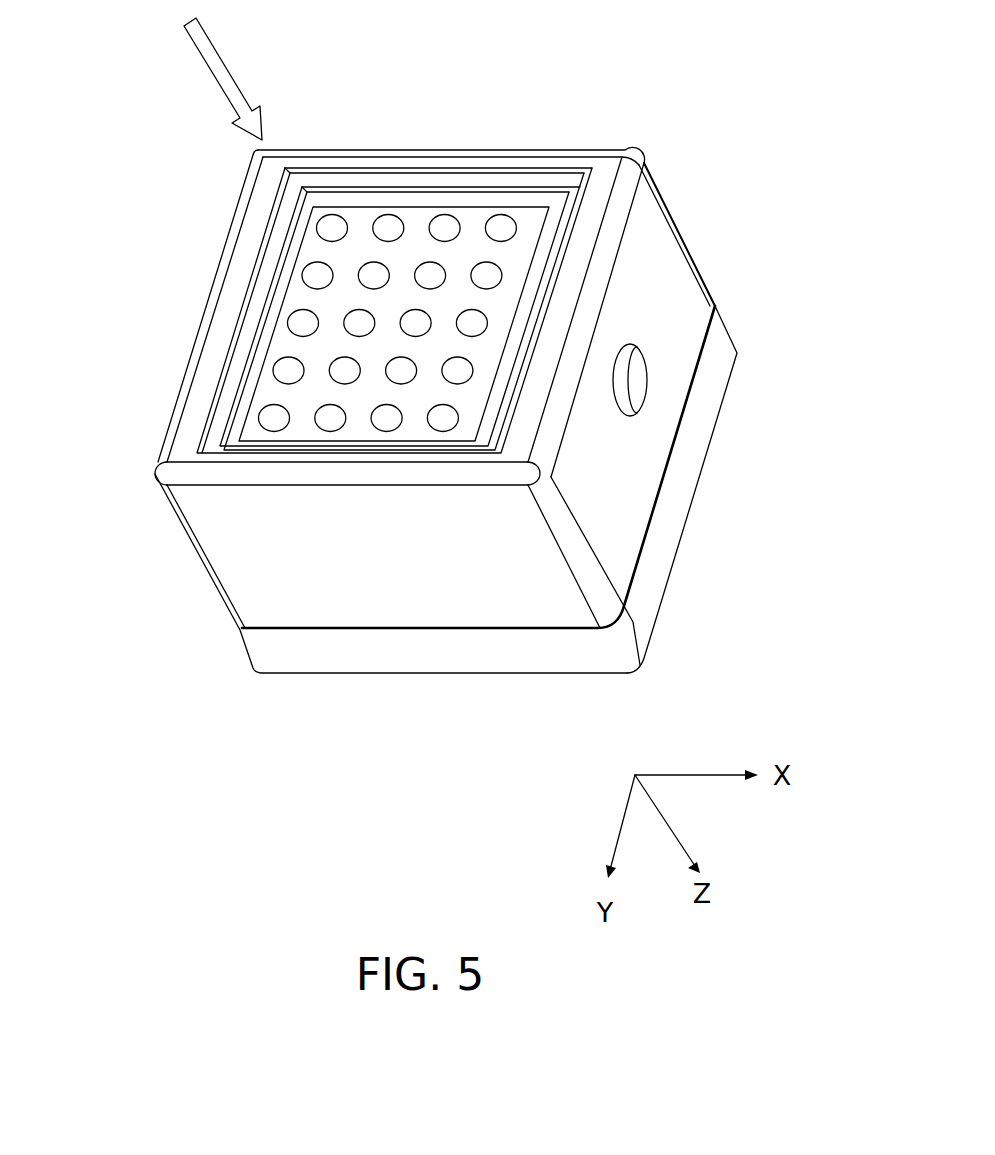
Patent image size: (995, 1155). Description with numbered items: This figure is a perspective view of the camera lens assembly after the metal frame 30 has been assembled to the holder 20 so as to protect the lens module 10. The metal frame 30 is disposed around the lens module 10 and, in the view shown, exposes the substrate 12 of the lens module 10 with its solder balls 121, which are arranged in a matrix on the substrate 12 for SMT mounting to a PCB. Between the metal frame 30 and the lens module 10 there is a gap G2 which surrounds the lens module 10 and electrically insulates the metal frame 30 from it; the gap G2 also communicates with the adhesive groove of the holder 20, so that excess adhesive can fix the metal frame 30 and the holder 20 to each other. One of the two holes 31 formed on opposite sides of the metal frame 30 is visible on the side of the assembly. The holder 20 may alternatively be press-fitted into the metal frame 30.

The lens module 10 is at (521, 192).
The substrate 12 is at (252, 401).
The solder balls 121 is at (283, 372).
The gap G2 is at (393, 190).
The holder 20 is at (697, 503).
The metal frame 30 is at (188, 554).
The holes 31 is at (628, 380).